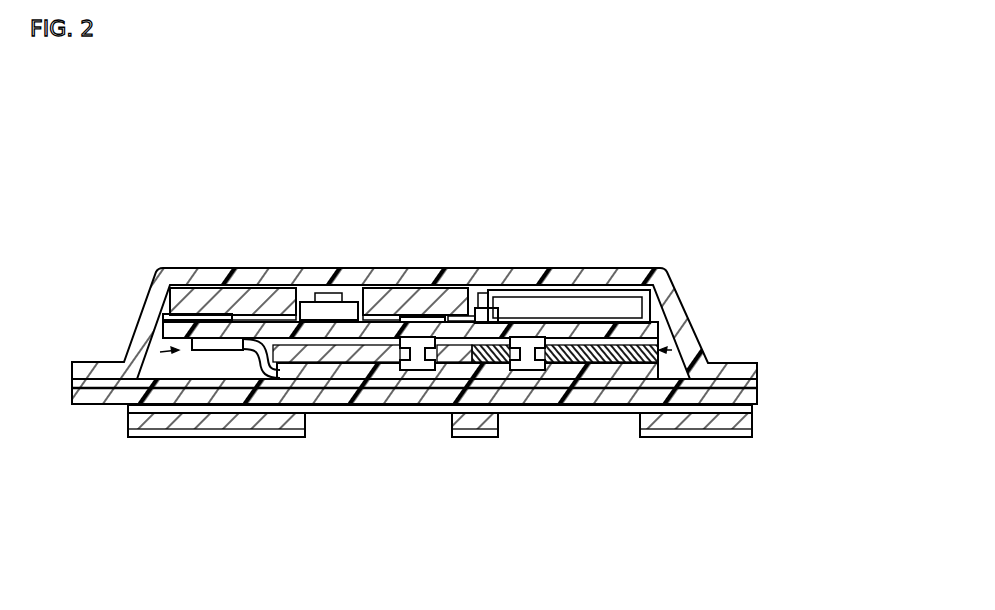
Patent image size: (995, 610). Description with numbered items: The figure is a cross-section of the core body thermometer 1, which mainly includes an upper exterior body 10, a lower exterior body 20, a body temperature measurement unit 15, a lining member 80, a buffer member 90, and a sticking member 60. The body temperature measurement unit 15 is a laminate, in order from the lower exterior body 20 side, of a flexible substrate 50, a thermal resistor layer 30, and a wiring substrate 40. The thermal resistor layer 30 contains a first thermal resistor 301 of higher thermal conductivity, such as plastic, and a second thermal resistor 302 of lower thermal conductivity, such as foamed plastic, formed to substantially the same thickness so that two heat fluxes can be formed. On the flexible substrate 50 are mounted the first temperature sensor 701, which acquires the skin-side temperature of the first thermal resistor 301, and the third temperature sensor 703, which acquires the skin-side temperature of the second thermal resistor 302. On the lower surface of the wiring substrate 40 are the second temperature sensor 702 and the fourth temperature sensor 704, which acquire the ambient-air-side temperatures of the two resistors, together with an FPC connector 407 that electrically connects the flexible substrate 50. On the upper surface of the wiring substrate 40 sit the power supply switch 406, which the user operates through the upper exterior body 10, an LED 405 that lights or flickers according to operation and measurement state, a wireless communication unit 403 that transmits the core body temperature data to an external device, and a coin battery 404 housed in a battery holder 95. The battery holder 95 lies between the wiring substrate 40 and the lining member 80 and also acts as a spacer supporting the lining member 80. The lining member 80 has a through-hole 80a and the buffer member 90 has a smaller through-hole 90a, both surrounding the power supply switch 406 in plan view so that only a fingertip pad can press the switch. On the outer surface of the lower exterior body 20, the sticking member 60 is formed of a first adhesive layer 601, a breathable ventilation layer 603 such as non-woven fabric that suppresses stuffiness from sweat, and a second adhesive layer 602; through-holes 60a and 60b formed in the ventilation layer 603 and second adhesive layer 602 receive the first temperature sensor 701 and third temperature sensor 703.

The core body thermometer 1 is at (622, 213).
The upper exterior body 10 is at (148, 283).
The body temperature measurement unit 15 is at (165, 352).
The lower exterior body 20 is at (88, 400).
The thermal resistor layer 30 is at (670, 349).
The first thermal resistor 301 is at (340, 362).
The second thermal resistor 302 is at (575, 362).
The wiring substrate 40 is at (358, 312).
The wireless communication unit 403 is at (215, 314).
The coin battery 404 is at (600, 295).
The LED 405 is at (486, 308).
The power supply switch 406 is at (330, 293).
The FPC connector 407 is at (232, 343).
The flexible substrate 50 is at (376, 380).
The sticking member 60 is at (150, 541).
The through-hole 60a is at (313, 420).
The through-hole 60b is at (622, 420).
The first adhesive layer 601 is at (250, 433).
The second adhesive layer 602 is at (180, 413).
The ventilation layer 603 is at (212, 425).
The first temperature sensor 701 is at (418, 370).
The second temperature sensor 702 is at (430, 318).
The third temperature sensor 703 is at (520, 370).
The fourth temperature sensor 704 is at (505, 322).
The lining member 80 is at (270, 290).
The through-hole 80a is at (305, 316).
The buffer member 90 is at (430, 290).
The through-hole 90a is at (372, 316).
The battery holder 95 is at (570, 292).